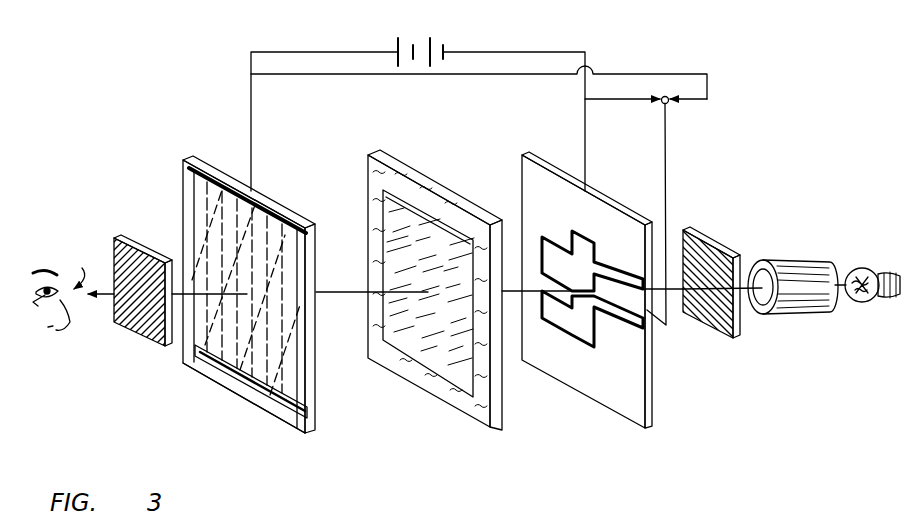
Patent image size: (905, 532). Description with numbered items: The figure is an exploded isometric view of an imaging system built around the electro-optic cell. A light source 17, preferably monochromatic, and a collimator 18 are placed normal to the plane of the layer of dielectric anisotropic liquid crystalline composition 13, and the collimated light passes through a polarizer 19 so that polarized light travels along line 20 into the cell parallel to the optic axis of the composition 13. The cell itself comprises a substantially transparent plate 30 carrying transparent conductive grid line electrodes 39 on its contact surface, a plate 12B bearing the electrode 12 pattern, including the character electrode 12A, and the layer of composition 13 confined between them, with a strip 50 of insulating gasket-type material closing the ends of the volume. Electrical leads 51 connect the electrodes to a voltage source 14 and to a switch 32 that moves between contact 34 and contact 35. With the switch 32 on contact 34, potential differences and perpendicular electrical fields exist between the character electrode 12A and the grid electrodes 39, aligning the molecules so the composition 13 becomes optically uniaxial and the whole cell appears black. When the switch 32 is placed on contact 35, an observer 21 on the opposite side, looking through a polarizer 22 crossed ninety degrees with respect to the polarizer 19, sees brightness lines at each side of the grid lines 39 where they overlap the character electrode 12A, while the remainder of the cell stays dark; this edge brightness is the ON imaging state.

The electrode 12 is at (582, 240).
The character electrode 12A is at (578, 332).
The background electrode 12B is at (528, 180).
The liquid crystalline composition 13 is at (384, 338).
The voltage source 14 is at (396, 46).
The light source 17 is at (858, 268).
The collimator 18 is at (785, 259).
The polarizer 19 is at (700, 233).
The line 20 is at (317, 292).
The observer 21 is at (90, 268).
The polarizer 22 is at (112, 243).
The transparent plate 30 is at (251, 290).
The switch 32 is at (660, 104).
The contact 34 is at (650, 97).
The contact 35 is at (682, 102).
The grid line electrodes 39 is at (186, 240).
The strip 50 is at (409, 288).
The electrical lead 51 is at (316, 226).